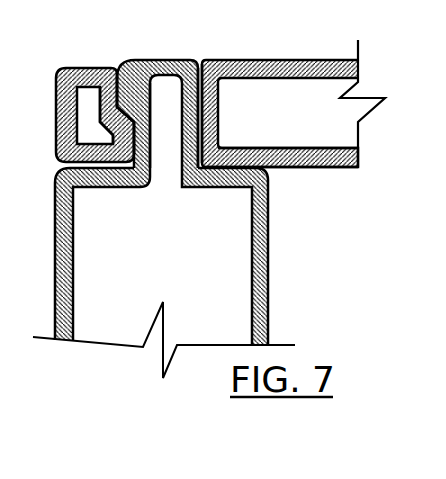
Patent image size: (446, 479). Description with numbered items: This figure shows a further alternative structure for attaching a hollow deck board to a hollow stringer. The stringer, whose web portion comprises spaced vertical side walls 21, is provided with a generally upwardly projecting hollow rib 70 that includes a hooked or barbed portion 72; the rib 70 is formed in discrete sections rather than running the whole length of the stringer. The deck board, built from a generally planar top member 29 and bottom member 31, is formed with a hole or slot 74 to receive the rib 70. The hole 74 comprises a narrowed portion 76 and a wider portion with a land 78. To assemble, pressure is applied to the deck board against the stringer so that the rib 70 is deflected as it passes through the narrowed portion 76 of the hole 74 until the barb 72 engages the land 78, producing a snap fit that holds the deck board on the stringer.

The side wall 21 is at (55, 265).
The top member 29 is at (317, 57).
The bottom member 31 is at (333, 168).
The hollow rib 70 is at (155, 62).
The hooked or barbed portion 72 is at (98, 70).
The hole or slot 74 is at (198, 60).
The narrowed portion 76 is at (150, 157).
The land 78 is at (112, 97).